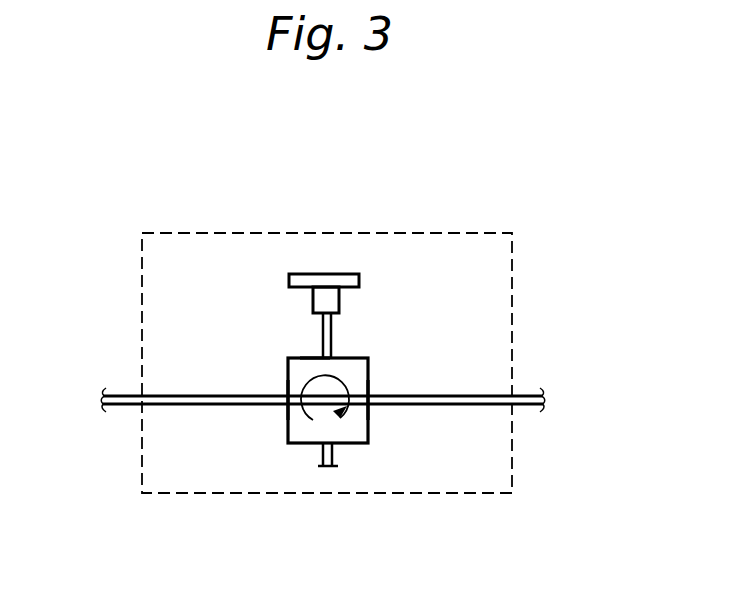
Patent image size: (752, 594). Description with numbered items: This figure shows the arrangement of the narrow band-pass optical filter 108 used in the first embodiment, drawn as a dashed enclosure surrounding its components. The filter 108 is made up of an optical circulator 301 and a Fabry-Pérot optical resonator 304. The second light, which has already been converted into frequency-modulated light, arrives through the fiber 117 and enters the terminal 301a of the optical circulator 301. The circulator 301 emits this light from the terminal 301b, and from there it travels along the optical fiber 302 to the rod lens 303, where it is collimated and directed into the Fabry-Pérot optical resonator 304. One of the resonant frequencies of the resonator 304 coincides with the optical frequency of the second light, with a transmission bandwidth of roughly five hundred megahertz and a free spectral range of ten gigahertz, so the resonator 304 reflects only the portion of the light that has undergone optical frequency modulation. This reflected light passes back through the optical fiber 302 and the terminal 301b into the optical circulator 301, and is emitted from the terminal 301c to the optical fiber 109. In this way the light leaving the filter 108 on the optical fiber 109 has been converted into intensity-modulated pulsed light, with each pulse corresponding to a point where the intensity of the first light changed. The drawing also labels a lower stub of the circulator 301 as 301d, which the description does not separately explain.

The narrow band-pass optical filter 108 is at (160, 232).
The optical fiber 109 is at (486, 395).
The fiber 117 is at (165, 405).
The optical circulator 301 is at (369, 418).
The terminal 301a is at (288, 393).
The terminal 301b is at (318, 357).
The terminal 301c is at (368, 392).
The bottom shaft of drive body 301d is at (318, 444).
The optical fiber 302 is at (332, 330).
The rod lens 303 is at (340, 298).
The Fabry-Pérot optical resonator 304 is at (326, 274).